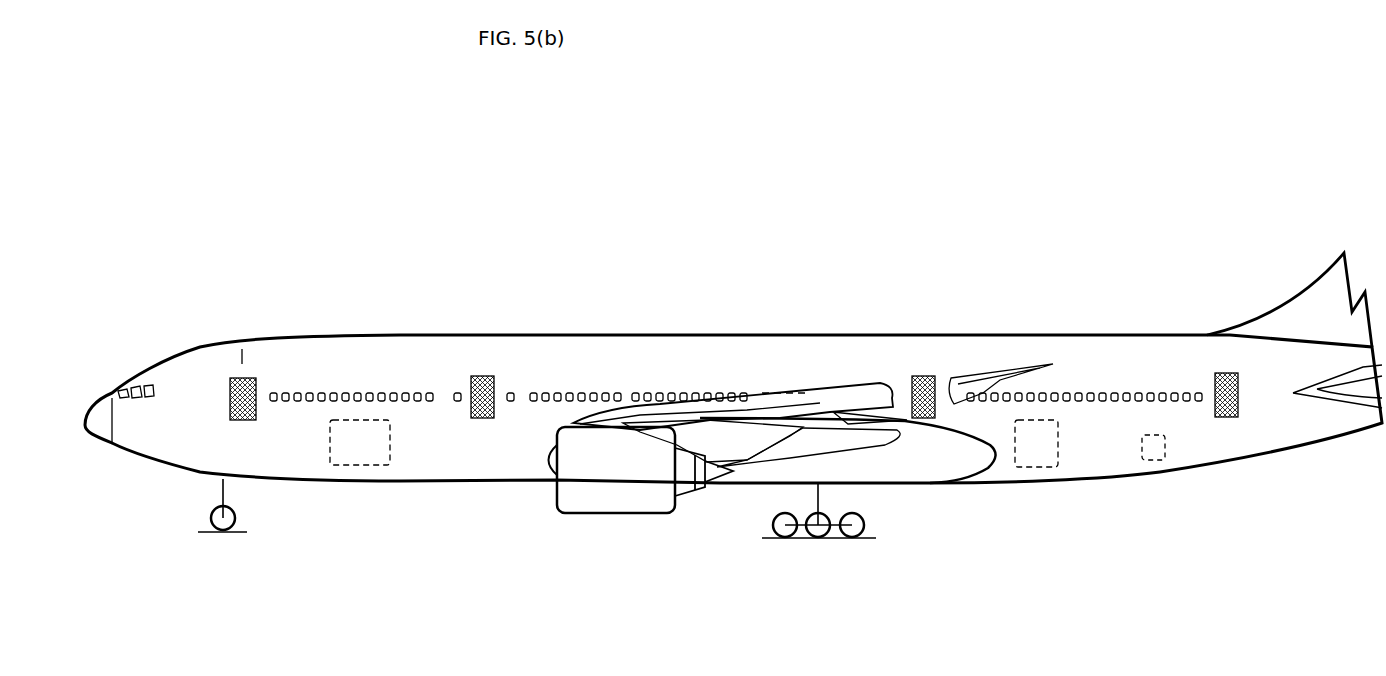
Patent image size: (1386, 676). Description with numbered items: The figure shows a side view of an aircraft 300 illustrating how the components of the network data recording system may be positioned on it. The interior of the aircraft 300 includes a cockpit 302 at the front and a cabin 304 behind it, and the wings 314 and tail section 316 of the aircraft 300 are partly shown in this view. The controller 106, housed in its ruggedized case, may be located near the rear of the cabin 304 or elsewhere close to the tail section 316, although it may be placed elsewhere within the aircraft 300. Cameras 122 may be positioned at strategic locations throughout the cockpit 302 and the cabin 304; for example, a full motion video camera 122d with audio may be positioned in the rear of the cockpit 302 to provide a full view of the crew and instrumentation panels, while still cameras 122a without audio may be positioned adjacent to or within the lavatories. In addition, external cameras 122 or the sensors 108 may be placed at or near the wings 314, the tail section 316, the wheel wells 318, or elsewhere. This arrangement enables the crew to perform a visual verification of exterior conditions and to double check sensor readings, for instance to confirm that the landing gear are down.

The aircraft 300 is at (325, 185).
The cockpit 302 is at (130, 360).
The cabin 304 is at (555, 360).
The sensors 108 is at (252, 375).
The cameras 122 is at (800, 413).
The wings 314 is at (845, 385).
The tail section 316 is at (1292, 311).
The controller 106 is at (1278, 425).
The still camera without audio 122a is at (205, 485).
The full motion video camera with audio 122d is at (840, 494).
The wheel wells 318 is at (252, 516).